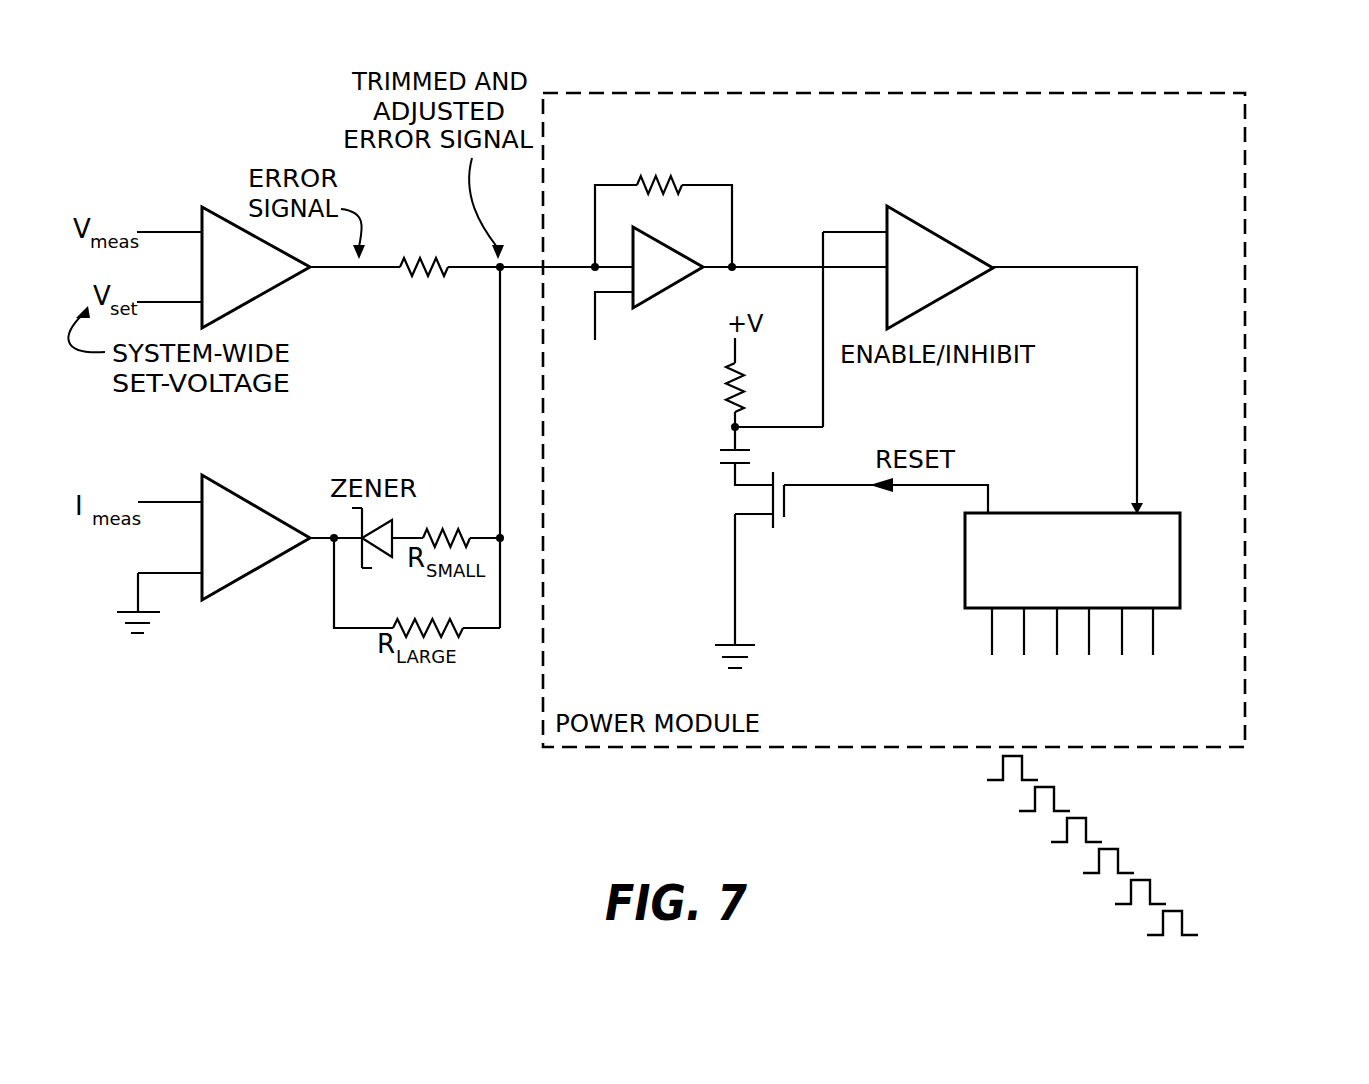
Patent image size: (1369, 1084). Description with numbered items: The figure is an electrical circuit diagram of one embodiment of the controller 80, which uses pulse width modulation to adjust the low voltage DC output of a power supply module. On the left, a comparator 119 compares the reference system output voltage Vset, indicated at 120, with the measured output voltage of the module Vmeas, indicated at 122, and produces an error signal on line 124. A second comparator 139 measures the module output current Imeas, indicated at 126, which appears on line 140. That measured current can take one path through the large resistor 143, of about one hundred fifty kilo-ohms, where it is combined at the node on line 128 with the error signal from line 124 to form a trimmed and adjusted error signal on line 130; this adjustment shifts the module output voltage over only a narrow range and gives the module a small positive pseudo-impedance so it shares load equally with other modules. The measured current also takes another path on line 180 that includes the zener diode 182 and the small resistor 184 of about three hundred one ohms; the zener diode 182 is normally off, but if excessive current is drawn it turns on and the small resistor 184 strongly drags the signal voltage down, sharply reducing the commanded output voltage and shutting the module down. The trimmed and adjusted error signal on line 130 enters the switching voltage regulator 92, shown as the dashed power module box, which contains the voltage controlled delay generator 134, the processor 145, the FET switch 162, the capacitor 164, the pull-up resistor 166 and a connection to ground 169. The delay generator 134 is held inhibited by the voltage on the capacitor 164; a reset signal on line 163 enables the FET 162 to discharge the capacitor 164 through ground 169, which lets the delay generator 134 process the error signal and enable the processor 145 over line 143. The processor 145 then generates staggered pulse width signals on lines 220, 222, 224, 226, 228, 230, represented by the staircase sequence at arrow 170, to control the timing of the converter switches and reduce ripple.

The controller 80 is at (1320, 205).
The switching voltage regulator 92 is at (1245, 335).
The comparator 119 is at (259, 280).
The reference system output voltage Vset 120 is at (122, 296).
The measured output voltage Vmeas 122 is at (118, 226).
The error signal line 124 is at (343, 270).
The measured output current Imeas 126 is at (112, 497).
The summing node line 128 is at (500, 408).
The trimmed and adjusted error signal line 130 is at (570, 266).
The voltage controlled delay generator 134 is at (960, 246).
The comparator 139 is at (278, 510).
The measured current line 140 is at (163, 502).
The large resistor / enable line 143 is at (1053, 267).
The processor 145 is at (1053, 513).
The switch (FET) 162 is at (760, 500).
The reset signal line 163 is at (922, 488).
The capacitor 164 is at (720, 454).
The pull-up resistor 166 is at (722, 386).
The ground 169 is at (735, 588).
The sequence of pulses 170 is at (1142, 817).
The line 180 is at (317, 543).
The zener diode 182 is at (358, 568).
The small resistor 184 is at (452, 535).
The pulse width signal line 220 is at (992, 655).
The pulse width signal line 222 is at (1024, 655).
The pulse width signal line 224 is at (1057, 655).
The pulse width signal line 226 is at (1089, 655).
The pulse width signal line 228 is at (1122, 655).
The pulse width signal line 230 is at (1153, 655).